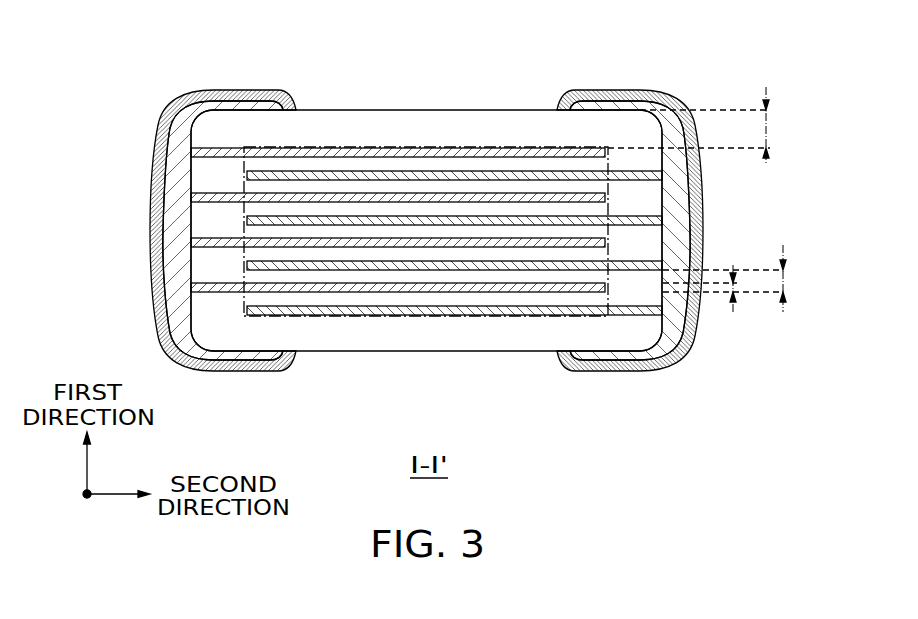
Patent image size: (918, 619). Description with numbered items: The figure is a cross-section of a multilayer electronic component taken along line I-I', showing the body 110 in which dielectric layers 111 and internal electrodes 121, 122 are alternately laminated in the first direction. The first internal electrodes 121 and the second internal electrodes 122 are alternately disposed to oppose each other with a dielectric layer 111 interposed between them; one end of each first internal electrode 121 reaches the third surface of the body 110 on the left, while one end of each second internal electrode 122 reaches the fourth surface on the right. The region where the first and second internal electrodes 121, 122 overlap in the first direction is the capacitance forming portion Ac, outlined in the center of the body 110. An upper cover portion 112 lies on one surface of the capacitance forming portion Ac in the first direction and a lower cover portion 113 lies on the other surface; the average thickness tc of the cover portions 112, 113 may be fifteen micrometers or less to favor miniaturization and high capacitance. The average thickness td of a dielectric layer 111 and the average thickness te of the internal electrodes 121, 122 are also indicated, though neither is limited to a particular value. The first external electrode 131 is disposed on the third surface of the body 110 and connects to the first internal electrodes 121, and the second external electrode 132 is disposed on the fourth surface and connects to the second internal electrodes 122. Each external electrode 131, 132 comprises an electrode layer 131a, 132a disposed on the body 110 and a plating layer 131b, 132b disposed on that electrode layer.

The body 110 is at (387, 110).
The dielectric layer 111 is at (322, 188).
The upper cover portion 112 is at (443, 128).
The lower cover portion 113 is at (440, 330).
The first internal electrode 121 is at (490, 150).
The second internal electrode 122 is at (538, 172).
The first external electrode 131 is at (149, 230).
The electrode layer 131a is at (178, 198).
The plating layer 131b is at (157, 223).
The second external electrode 132 is at (704, 230).
The electrode layer 132a is at (675, 198).
The plating layer 132b is at (696, 223).
The capacitance forming portion Ac is at (508, 316).
The average thickness of the cover portions tc is at (699, 125).
The average thickness of the dielectric layer td is at (737, 278).
The average thickness of the internal electrodes te is at (712, 288).